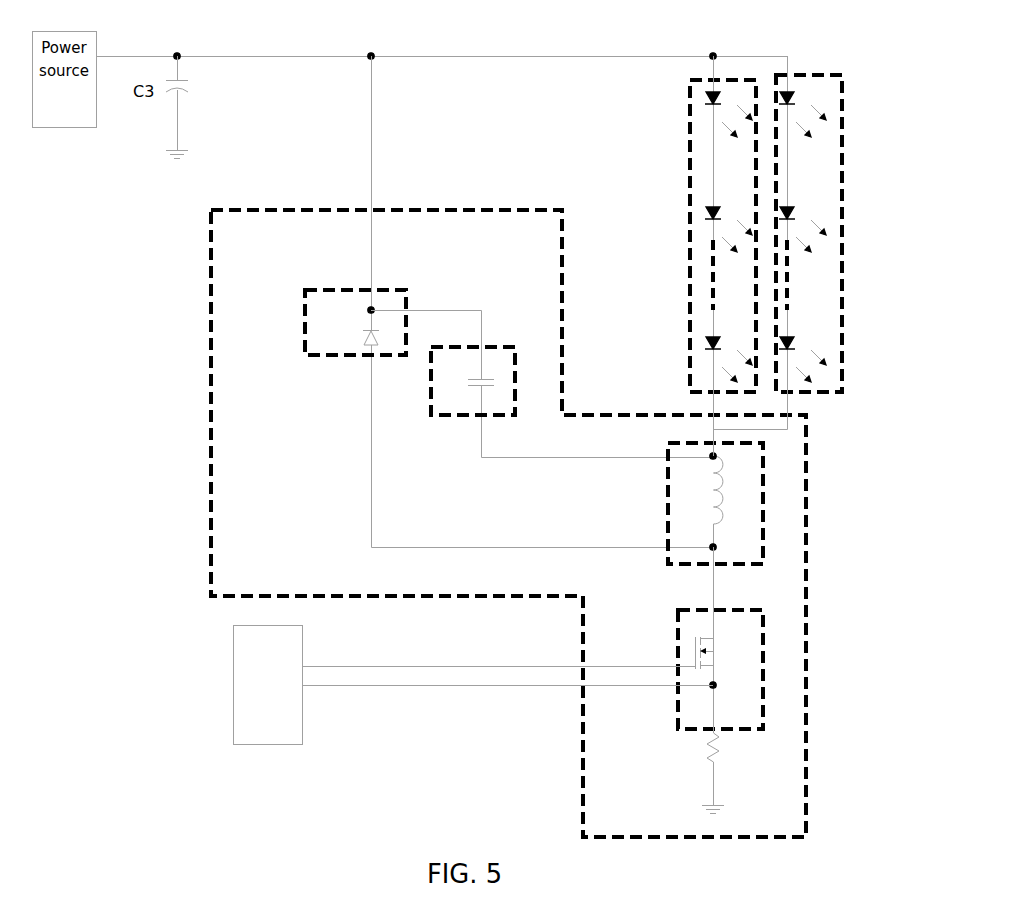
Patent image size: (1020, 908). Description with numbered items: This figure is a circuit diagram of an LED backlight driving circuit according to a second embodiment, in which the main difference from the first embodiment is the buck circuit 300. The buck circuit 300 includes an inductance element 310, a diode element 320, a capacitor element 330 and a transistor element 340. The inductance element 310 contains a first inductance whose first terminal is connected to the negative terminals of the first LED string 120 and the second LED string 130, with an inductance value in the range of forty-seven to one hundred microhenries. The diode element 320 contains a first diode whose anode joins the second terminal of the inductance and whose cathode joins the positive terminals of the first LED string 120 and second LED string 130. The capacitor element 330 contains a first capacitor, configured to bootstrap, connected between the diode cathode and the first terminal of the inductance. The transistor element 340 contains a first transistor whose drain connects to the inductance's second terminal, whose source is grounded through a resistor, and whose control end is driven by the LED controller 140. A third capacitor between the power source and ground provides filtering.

The first LED string 120 is at (689, 137).
The second LED string 130 is at (842, 157).
The LED controller 140 is at (250, 702).
The buck circuit 300 is at (807, 548).
The inductance element 310 is at (765, 480).
The diode element 320 is at (305, 290).
The capacitor element 330 is at (463, 418).
The transistor element 340 is at (764, 664).